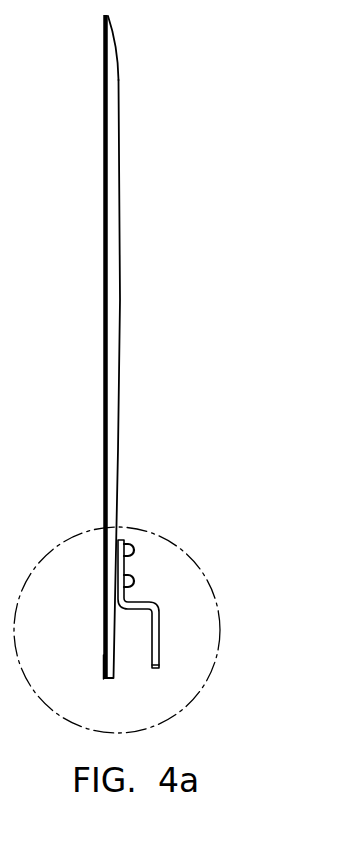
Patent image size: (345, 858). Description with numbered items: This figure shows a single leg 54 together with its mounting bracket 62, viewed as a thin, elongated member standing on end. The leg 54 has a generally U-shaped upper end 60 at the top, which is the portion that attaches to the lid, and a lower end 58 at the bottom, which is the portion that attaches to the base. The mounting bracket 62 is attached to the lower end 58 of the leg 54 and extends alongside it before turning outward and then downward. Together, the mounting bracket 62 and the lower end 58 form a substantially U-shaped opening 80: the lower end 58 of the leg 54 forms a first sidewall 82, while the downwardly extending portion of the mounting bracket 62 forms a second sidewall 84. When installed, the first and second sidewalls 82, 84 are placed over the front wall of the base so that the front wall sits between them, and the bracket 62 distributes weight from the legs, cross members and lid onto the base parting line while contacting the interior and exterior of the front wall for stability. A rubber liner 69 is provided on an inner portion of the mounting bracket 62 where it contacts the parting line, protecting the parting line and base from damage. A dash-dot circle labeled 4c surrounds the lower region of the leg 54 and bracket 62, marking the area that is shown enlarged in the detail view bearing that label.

The leg 54 is at (150, 96).
The upper end 60 is at (103, 51).
The lower end 58 is at (103, 659).
The mounting bracket 62 is at (161, 619).
The rubber liner 69 is at (130, 619).
The U-shaped opening 80 is at (133, 657).
The first sidewall 82 is at (115, 651).
The second sidewall 84 is at (157, 646).
The detail view 4c is at (207, 573).